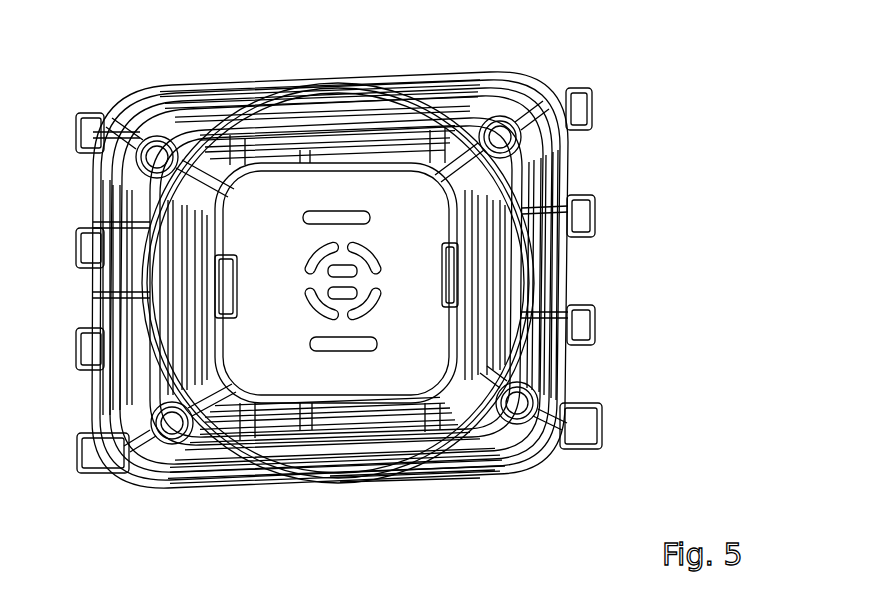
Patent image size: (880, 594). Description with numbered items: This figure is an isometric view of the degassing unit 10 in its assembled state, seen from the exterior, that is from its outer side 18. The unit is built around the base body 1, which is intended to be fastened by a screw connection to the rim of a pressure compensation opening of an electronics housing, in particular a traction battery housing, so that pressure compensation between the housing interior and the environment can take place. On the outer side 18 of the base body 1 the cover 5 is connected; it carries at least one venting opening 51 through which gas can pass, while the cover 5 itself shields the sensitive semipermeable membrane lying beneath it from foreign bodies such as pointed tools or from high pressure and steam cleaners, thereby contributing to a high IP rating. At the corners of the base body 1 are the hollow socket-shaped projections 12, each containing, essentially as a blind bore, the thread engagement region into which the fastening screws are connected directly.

The degassing unit 10 is at (323, 273).
The base body 1 is at (575, 170).
The cover 5 is at (417, 350).
The venting opening 51 is at (349, 344).
The hollow socket-shaped projection 12 is at (172, 421).
The outer side 18 is at (478, 492).